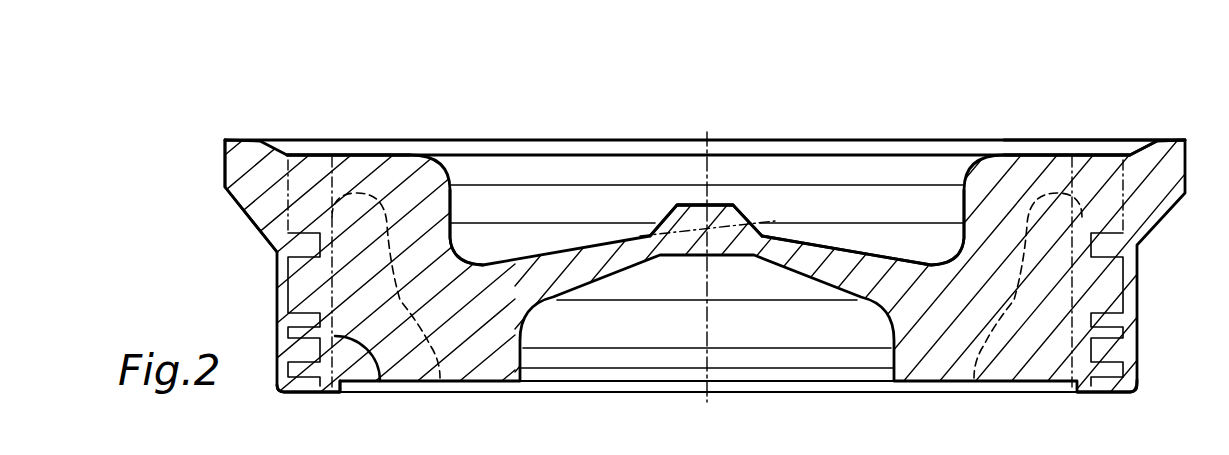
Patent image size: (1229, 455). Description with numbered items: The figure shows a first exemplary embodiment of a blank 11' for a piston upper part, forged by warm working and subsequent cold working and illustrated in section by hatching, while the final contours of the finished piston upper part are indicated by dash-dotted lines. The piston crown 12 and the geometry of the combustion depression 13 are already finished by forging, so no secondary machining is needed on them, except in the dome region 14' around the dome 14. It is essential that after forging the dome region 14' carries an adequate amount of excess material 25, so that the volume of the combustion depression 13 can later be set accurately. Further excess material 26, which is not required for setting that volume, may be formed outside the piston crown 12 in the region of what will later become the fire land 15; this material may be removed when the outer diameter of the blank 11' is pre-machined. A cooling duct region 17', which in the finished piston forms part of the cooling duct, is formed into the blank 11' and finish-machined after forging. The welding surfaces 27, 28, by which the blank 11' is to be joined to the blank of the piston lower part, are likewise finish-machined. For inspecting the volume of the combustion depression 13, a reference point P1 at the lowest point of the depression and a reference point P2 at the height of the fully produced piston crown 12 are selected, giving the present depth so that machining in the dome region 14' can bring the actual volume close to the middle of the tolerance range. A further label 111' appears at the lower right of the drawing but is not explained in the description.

The blank 11' is at (724, 221).
The piston crown 12 is at (1047, 157).
The combustion depression 13 is at (913, 207).
The dome 14 is at (743, 156).
The dome region 14' is at (728, 140).
The fire land 15 is at (317, 167).
The cooling duct region 17' is at (386, 305).
The excess material 25 is at (655, 215).
The further excess material 26 is at (245, 177).
The welding surface 27 is at (310, 392).
The welding surface 28 is at (502, 393).
The lower part 111' is at (1142, 417).
The reference point P1 is at (483, 262).
The reference point P2 is at (400, 150).